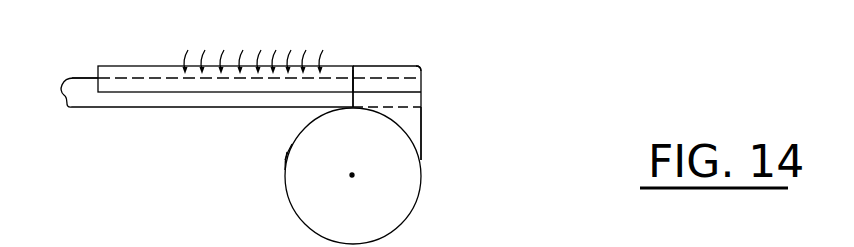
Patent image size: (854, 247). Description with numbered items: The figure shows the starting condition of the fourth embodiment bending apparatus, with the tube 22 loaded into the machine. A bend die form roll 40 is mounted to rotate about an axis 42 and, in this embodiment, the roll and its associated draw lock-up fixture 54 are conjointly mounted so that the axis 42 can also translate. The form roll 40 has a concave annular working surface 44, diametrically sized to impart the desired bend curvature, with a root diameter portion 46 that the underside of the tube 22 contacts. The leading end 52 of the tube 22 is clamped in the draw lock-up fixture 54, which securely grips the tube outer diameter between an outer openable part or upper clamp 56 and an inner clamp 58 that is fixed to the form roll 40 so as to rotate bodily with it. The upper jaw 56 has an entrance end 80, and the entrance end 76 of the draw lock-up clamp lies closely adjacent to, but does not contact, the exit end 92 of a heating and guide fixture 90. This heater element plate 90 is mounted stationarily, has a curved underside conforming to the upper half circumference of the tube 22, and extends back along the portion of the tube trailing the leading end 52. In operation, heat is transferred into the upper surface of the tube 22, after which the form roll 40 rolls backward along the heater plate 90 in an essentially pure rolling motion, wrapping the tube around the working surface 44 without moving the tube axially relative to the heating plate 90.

The tube 22 is at (136, 110).
The bend die form roll 40 is at (302, 200).
The axis 42 is at (352, 175).
The concave annular working surface 44 is at (292, 145).
The root diameter portion 46 is at (287, 154).
The leading end 52 is at (403, 80).
The draw-feeding lock-up fixture 54 is at (436, 104).
The outer openable part 56 is at (418, 56).
The inner clamp 58 is at (416, 130).
The entrance end 76 is at (353, 67).
The entrance end 80 is at (352, 98).
The heating and guide fixture 90 is at (77, 72).
The exit end 92 is at (355, 82).